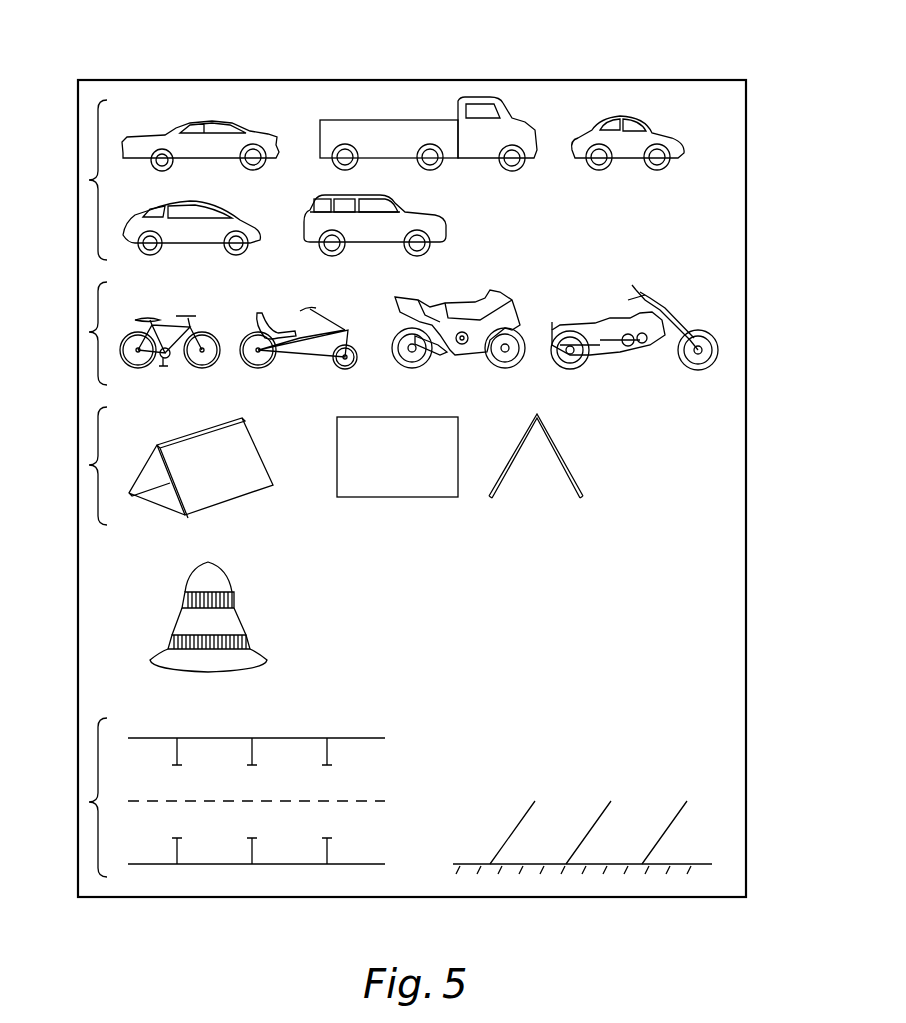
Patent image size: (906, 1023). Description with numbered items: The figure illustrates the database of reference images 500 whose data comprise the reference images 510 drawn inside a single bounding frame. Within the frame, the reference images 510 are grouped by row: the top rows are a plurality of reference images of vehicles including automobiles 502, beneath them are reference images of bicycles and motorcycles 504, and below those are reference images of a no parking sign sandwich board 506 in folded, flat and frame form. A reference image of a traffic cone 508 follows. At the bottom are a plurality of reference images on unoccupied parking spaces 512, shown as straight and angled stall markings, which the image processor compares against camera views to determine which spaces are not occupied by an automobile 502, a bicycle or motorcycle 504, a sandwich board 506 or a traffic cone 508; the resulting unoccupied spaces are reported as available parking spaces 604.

The database of reference images 500 is at (463, 57).
The automobiles 502 is at (89, 180).
The bicycles and motorcycles 504 is at (89, 332).
The no parking sign sandwich board 506 is at (89, 465).
The traffic cone 508 is at (172, 620).
The reference images 510 is at (692, 540).
The reference images on unoccupied parking spaces 512 is at (372, 784).
The available parking spaces 604 is at (288, 752).